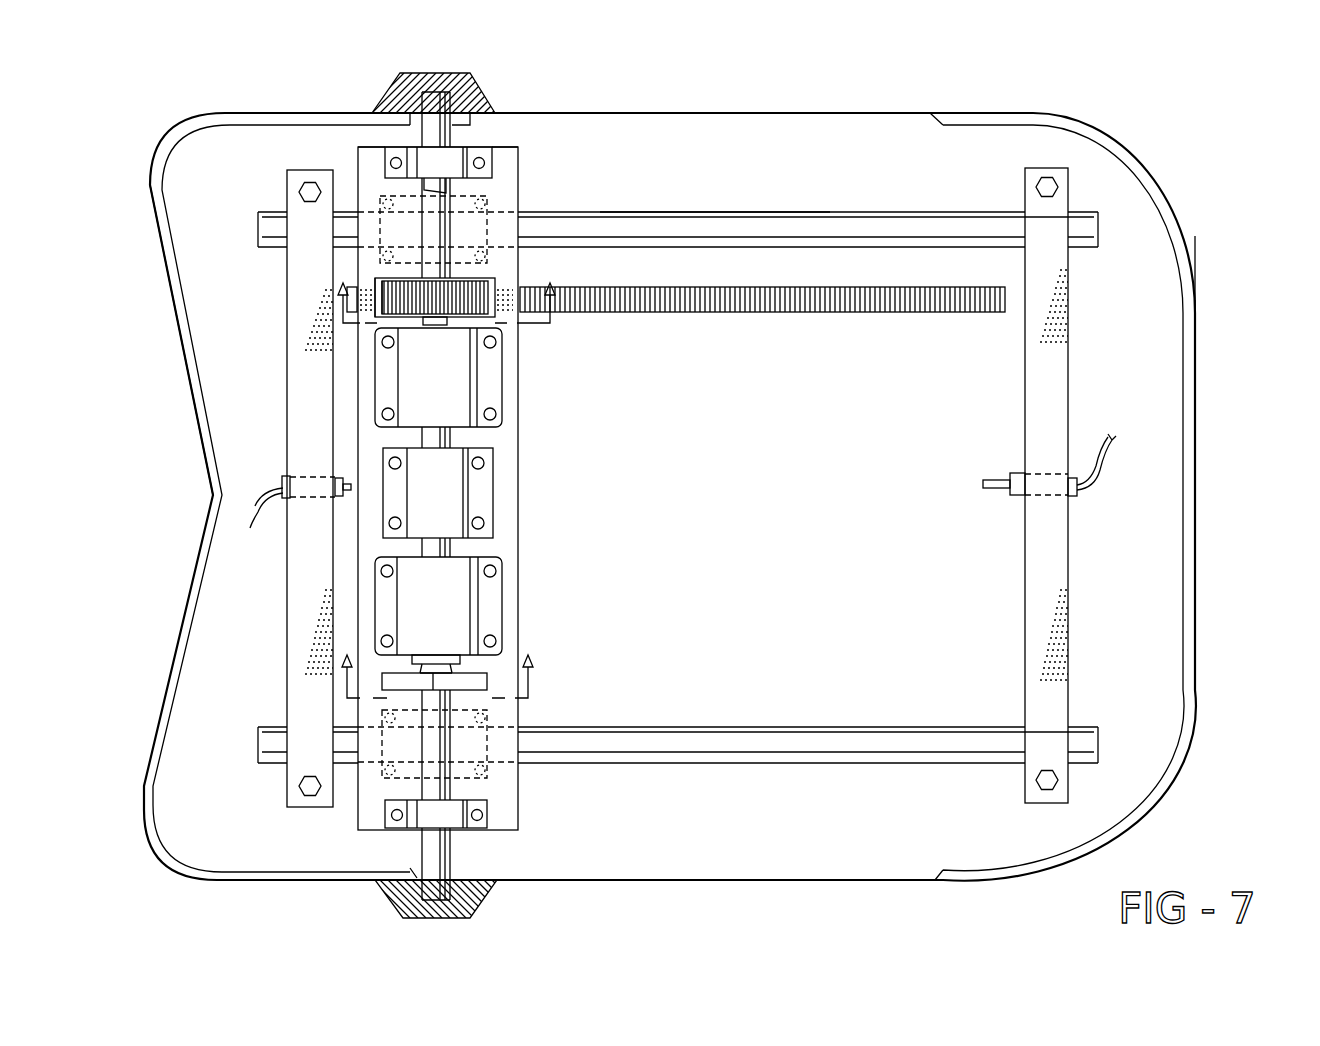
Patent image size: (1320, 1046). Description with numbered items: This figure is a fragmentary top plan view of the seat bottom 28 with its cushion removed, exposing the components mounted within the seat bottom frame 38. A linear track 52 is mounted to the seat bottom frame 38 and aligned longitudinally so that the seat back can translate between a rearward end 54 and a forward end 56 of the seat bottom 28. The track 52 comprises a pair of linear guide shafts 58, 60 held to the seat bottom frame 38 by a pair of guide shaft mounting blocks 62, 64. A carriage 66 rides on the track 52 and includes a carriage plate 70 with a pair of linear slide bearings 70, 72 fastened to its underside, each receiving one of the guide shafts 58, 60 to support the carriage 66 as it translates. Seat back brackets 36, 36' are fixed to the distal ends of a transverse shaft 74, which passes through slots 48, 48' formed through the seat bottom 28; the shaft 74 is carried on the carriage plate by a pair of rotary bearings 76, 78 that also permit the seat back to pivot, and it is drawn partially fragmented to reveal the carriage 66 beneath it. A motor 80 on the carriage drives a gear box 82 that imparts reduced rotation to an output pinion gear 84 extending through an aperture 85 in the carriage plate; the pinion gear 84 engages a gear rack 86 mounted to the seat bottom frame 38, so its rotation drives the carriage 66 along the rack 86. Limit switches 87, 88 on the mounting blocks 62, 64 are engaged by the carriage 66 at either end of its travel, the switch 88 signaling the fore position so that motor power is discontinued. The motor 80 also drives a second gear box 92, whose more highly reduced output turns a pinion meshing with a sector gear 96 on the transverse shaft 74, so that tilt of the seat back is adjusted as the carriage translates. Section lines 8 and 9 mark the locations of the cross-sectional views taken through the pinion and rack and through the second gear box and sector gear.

The seat bottom 28 is at (1160, 152).
The seat back bracket 36 is at (446, 919).
The seat back bracket 36' is at (444, 78).
The seat bottom frame 38 is at (1197, 302).
The slot 48 is at (706, 906).
The slot 48' is at (706, 90).
The linear track 52 is at (832, 200).
The rearward end 54 is at (156, 172).
The forward end 56 is at (1195, 236).
The linear guide shaft 58 is at (712, 212).
The linear guide shaft 60 is at (720, 752).
The guide shaft mounting block 62 is at (286, 591).
The guide shaft mounting block 64 is at (1070, 590).
The carriage 66 is at (363, 131).
The linear slide bearing 70 is at (377, 232).
The linear slide bearing 72 is at (487, 785).
The transverse shaft 74 is at (437, 860).
The rotary bearing 76 is at (495, 160).
The rotary bearing 78 is at (390, 830).
The motor 80 is at (494, 510).
The gear box 82 is at (503, 413).
The output pinion gear 84 is at (477, 278).
The aperture 85 is at (388, 275).
The gear rack 86 is at (802, 300).
The limit switch 87 is at (337, 476).
The limit switch 88 is at (1012, 475).
The second gear box 92 is at (463, 603).
The sector gear 96 is at (470, 680).
The section line 8- 8 is at (446, 289).
The section line 9- 9 is at (437, 661).